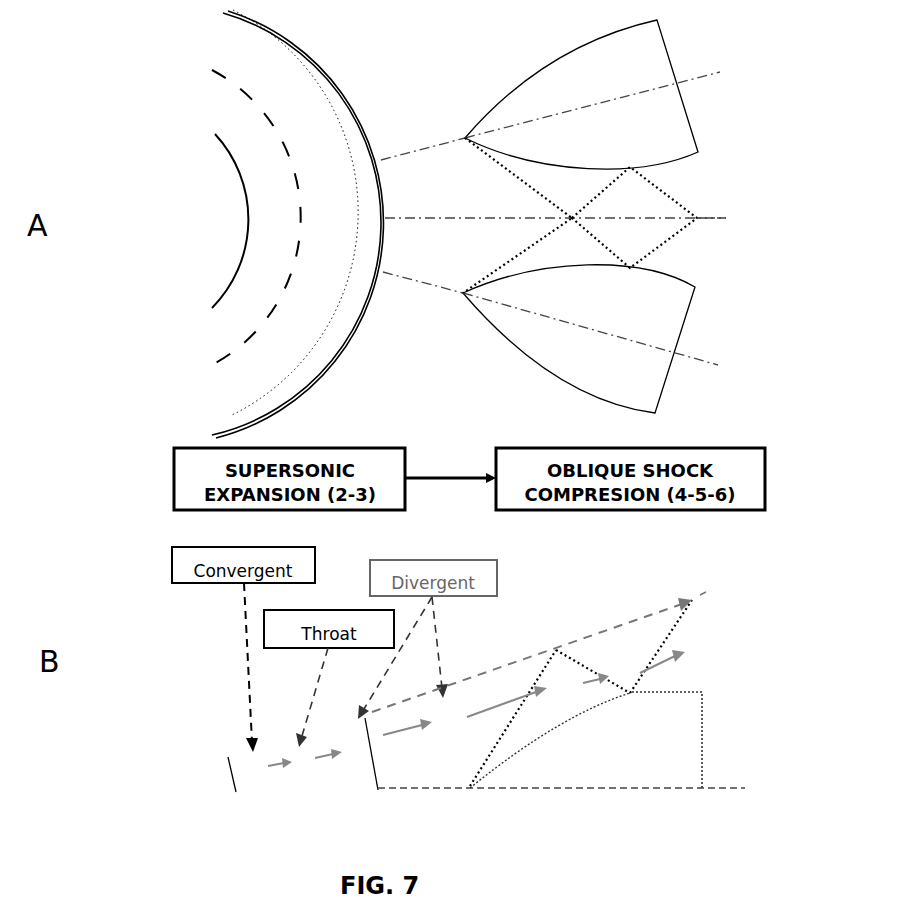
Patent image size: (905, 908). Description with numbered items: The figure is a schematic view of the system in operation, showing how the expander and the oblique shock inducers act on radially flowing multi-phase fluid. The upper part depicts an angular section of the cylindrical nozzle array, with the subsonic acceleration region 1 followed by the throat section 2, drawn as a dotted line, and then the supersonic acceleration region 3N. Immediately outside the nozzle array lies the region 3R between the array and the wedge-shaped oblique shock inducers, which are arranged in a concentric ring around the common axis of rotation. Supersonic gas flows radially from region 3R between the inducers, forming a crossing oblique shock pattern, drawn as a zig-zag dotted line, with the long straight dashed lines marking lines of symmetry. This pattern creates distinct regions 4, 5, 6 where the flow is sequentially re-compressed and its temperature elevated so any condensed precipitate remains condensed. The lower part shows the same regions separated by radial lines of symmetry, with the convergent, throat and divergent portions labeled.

The subsonic acceleration region 1 is at (243, 463).
The throat section 2 is at (261, 423).
The supersonic acceleration region 3N is at (297, 400).
The region between the cylindrical nozzle array and the oblique shock inducers 3R is at (553, 449).
The oblique shock re-compression region 4 is at (521, 462).
The oblique shock re-compression region 5 is at (626, 430).
The oblique shock re-compression region 6 is at (678, 433).